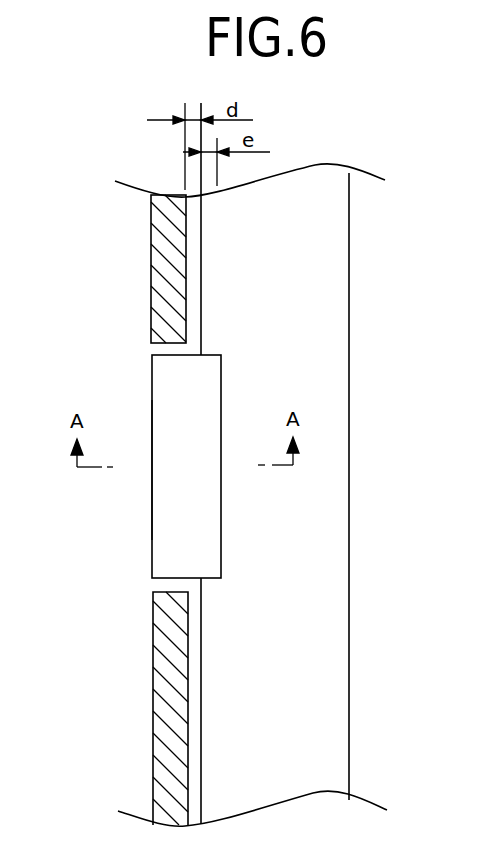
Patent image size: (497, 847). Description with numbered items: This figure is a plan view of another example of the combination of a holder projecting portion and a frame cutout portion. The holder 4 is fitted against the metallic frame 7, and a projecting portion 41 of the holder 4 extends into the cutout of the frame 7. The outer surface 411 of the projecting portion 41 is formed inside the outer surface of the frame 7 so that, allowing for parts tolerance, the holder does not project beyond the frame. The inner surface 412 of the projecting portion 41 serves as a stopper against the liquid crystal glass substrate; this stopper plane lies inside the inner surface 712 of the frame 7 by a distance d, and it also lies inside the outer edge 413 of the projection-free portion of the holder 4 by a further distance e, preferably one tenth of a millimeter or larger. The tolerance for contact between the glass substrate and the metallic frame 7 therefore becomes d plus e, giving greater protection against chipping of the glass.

The holder 4 is at (291, 194).
The frame 7 is at (151, 246).
The projecting portion of the holder 41 is at (170, 383).
The outer surface of the projecting portion 411 is at (152, 520).
The inner surface of the projecting portion 412 is at (221, 524).
The outer edge of the projection-free portion of the holder 413 is at (203, 660).
The inner surface of the frame 712 is at (153, 708).